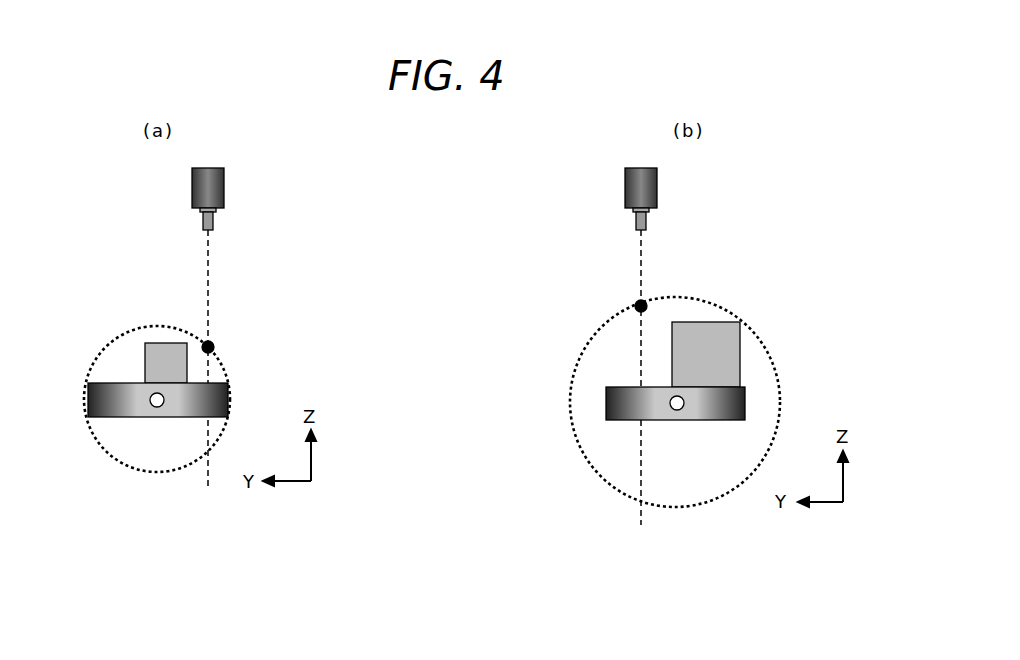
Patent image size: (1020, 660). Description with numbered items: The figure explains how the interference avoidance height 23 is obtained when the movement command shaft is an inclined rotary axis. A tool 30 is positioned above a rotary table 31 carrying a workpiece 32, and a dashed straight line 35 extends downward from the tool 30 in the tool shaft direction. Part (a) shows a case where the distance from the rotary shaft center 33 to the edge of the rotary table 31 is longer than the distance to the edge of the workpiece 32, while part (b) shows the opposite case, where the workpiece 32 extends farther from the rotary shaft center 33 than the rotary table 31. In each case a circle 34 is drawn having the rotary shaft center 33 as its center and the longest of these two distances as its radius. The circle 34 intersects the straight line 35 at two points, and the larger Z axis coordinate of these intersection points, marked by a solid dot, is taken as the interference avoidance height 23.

The tool 30 is at (225, 179).
The straight line in the tool shaft direction 35 is at (210, 247).
The interference avoidance height 23 is at (636, 303).
The rotary table 31 is at (103, 383).
The workpiece 32 is at (160, 343).
The rotary shaft center 33 is at (160, 406).
The circle 34 is at (98, 445).